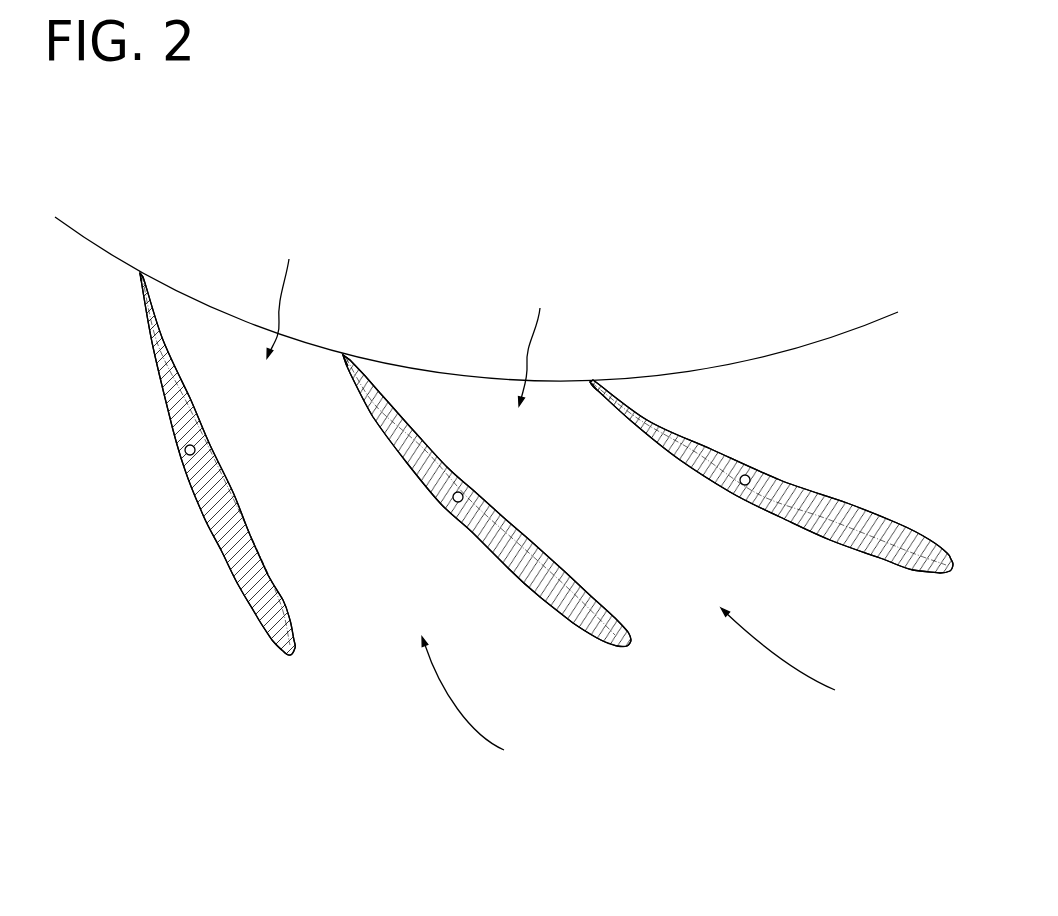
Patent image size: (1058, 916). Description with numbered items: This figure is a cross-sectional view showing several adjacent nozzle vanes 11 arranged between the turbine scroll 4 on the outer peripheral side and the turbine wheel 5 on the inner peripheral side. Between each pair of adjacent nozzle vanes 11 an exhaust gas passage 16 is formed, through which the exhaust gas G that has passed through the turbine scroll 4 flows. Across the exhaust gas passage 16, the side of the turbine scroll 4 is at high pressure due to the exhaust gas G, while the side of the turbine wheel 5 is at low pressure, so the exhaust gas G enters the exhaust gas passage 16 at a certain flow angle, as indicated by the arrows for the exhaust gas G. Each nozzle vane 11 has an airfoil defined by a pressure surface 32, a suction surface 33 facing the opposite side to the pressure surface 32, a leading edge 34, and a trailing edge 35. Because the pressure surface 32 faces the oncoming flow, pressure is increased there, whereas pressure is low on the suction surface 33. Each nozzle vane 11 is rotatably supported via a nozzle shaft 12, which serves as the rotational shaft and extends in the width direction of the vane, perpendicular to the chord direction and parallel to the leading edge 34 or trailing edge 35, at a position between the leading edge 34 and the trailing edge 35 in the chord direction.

The turbine scroll 4 is at (536, 842).
The turbine wheel 5 is at (607, 164).
The nozzle vane 11 is at (253, 541).
The nozzle shaft 12 is at (198, 447).
The exhaust gas passage 16 is at (413, 319).
The pressure surface 32 is at (188, 393).
The suction surface 33 is at (201, 517).
The leading edge 34 is at (289, 653).
The trailing edge 35 is at (140, 272).
The exhaust gas G is at (641, 692).